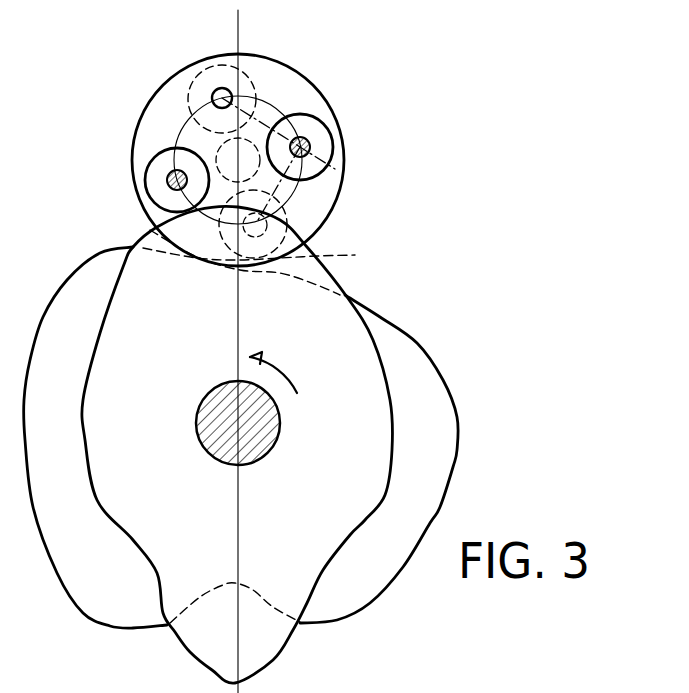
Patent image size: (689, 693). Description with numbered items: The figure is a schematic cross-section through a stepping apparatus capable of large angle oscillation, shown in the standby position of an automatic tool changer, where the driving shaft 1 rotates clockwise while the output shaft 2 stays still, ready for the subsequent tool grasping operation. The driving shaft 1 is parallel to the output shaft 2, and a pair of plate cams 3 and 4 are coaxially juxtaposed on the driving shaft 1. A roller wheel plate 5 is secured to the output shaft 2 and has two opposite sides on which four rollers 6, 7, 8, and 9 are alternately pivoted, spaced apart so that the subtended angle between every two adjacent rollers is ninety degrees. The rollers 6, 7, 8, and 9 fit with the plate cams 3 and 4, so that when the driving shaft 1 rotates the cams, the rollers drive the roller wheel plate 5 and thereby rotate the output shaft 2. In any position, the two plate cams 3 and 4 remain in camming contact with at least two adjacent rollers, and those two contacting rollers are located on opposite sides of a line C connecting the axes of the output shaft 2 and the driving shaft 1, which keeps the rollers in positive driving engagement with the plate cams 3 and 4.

The driving shaft 1 is at (255, 432).
The output shaft 2 is at (250, 215).
The plate cam 3 is at (440, 388).
The plate cam 4 is at (192, 640).
The roller wheel plate 5 is at (310, 97).
The roller 6 is at (150, 192).
The roller 7 is at (298, 252).
The roller 8 is at (323, 145).
The roller 9 is at (247, 86).
The line connecting the axes of the output shaft and driving shaft C is at (235, 542).